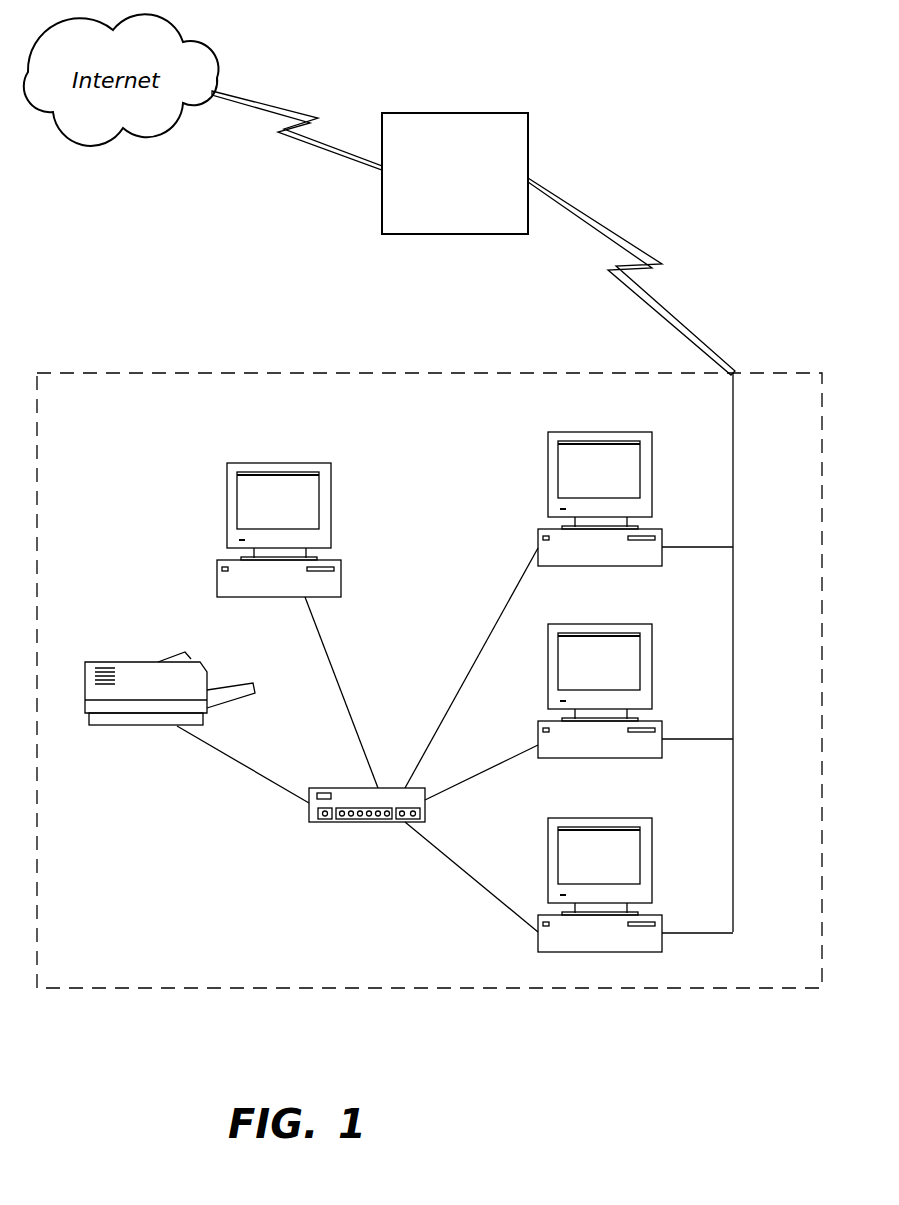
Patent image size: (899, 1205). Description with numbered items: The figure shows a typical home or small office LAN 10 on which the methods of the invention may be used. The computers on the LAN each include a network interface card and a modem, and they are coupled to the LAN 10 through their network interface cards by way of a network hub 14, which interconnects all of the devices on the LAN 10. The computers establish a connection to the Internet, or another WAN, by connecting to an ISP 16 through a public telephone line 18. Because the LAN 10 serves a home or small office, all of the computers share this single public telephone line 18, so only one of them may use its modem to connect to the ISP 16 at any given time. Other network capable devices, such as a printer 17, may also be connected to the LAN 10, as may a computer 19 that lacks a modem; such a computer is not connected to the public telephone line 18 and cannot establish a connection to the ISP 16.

The LAN 10 is at (188, 373).
The network hub 14 is at (343, 822).
The ISP 16 is at (435, 234).
The printer 17 is at (138, 725).
The public telephone line 18 is at (733, 435).
The computer 19 is at (217, 575).